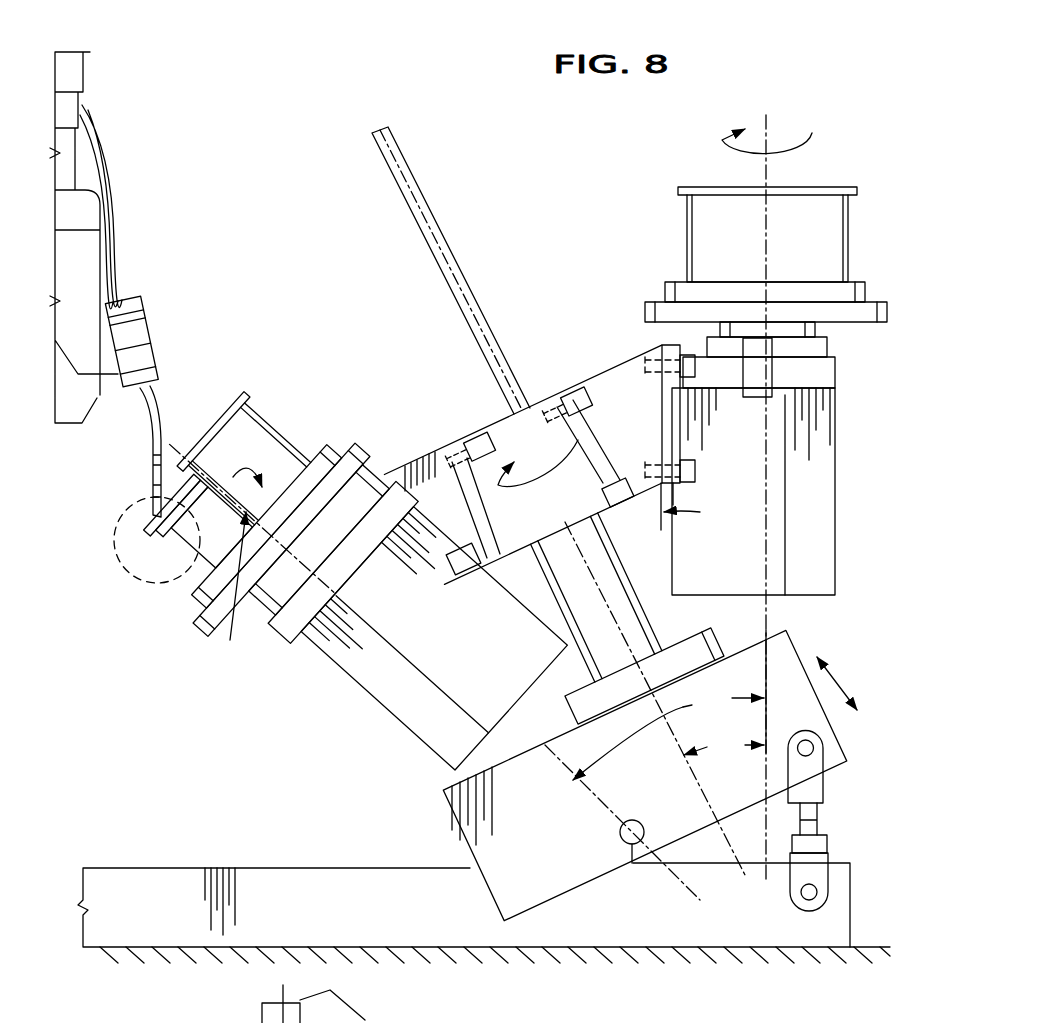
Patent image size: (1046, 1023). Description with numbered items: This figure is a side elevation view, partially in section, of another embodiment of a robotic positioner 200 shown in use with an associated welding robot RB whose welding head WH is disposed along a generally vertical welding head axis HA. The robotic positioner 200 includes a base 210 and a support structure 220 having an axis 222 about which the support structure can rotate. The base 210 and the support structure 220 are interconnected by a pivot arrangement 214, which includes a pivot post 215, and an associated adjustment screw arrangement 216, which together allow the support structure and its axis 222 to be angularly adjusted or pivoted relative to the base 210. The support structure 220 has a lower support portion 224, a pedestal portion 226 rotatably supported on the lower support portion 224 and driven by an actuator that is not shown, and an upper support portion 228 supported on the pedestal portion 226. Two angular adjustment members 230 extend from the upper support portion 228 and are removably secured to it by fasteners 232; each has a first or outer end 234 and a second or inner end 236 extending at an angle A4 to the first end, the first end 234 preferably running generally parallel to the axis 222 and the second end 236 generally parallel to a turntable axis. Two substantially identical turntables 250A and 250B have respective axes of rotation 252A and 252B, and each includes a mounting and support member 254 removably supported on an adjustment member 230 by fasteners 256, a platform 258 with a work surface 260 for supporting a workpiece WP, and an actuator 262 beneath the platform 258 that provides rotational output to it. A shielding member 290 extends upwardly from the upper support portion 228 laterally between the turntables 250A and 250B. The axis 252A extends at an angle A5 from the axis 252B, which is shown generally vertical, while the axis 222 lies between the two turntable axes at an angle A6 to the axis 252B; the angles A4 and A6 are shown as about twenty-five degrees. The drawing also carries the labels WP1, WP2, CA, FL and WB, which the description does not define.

The welding robot RB is at (93, 62).
The welding head WH is at (160, 403).
The workpiece WP is at (697, 182).
The first workpiece part WP1 is at (157, 560).
The second workpiece part WP2 is at (158, 528).
The welding head axis HA is at (147, 560).
The center axis CA is at (223, 593).
The shielding member 290 is at (400, 128).
The turntable 250A is at (356, 452).
The turntable 250B is at (647, 293).
The axis of rotation 252A is at (355, 605).
The axis of rotation 252B is at (768, 140).
The mounting and support member 254 is at (830, 378).
The fasteners 256 is at (700, 480).
The platform 258 is at (795, 302).
The work surface 260 is at (656, 292).
The actuator 262 is at (803, 552).
The support structure 220 is at (677, 607).
The upper support portion 228 is at (525, 400).
The angular adjustment members 230 is at (613, 377).
The fasteners 232 is at (558, 390).
The first or outer end 234 is at (418, 510).
The second or inner end 236 is at (607, 407).
The pedestal portion 226 is at (635, 508).
The lower support portion 224 is at (527, 870).
The axis 222 is at (700, 860).
The pivot arrangement 214 is at (617, 852).
The pivot post 215 is at (634, 863).
The base 210 is at (690, 915).
The adjustment screw arrangement 216 is at (827, 902).
The robotic positioner 200 is at (340, 753).
The floor FL is at (187, 945).
The weld bead / workpiece detail WB is at (343, 1004).
The angle A4 is at (696, 507).
The angle A5 is at (668, 733).
The angle A6 is at (724, 745).